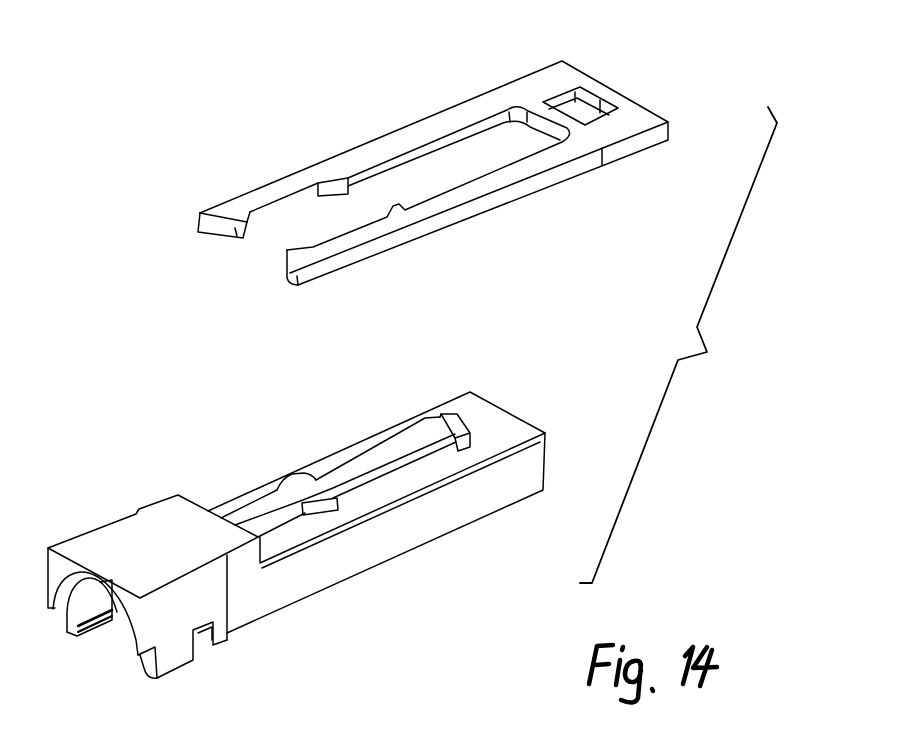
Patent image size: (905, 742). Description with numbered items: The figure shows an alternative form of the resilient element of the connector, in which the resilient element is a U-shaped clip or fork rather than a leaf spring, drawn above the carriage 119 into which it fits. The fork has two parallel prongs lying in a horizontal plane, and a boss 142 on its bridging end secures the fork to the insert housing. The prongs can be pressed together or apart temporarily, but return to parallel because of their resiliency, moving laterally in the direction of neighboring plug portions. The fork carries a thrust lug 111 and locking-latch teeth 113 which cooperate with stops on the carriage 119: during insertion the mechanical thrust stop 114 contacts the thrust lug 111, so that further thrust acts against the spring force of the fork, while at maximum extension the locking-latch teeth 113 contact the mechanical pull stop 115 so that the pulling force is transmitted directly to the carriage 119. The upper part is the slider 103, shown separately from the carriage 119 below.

The slider 103 is at (438, 98).
The thrust lug 111 is at (237, 220).
The locking-latch teeth 113 is at (336, 180).
The boss 142 is at (597, 105).
The carriage 119 is at (156, 464).
The mechanical thrust stop 114 is at (292, 483).
The mechanical pull stop 115 is at (470, 428).